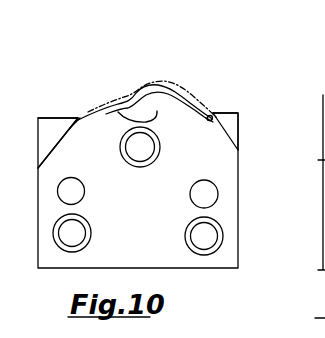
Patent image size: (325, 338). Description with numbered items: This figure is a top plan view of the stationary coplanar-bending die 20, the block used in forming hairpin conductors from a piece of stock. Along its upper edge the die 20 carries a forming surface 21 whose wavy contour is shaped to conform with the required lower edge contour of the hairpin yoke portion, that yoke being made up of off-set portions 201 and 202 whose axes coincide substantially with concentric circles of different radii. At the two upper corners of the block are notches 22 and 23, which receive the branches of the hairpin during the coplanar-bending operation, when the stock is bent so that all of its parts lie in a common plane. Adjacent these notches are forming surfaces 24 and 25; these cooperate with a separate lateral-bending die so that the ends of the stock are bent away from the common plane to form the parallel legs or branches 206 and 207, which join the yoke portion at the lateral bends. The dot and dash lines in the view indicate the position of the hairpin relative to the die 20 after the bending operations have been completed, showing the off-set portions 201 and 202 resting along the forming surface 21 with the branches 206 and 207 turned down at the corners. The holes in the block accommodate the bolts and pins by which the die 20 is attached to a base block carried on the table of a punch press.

The stationary coplanar-bending die 20 is at (180, 258).
The forming surface 21 is at (148, 116).
The notch 22 is at (323, 137).
The notch 23 is at (50, 135).
The forming surface 24 is at (70, 130).
The forming surface 25 is at (211, 124).
The off-set portion 201 is at (113, 103).
The off-set portion 202 is at (168, 82).
The leg or branch 206 is at (78, 117).
The leg or branch 207 is at (212, 114).